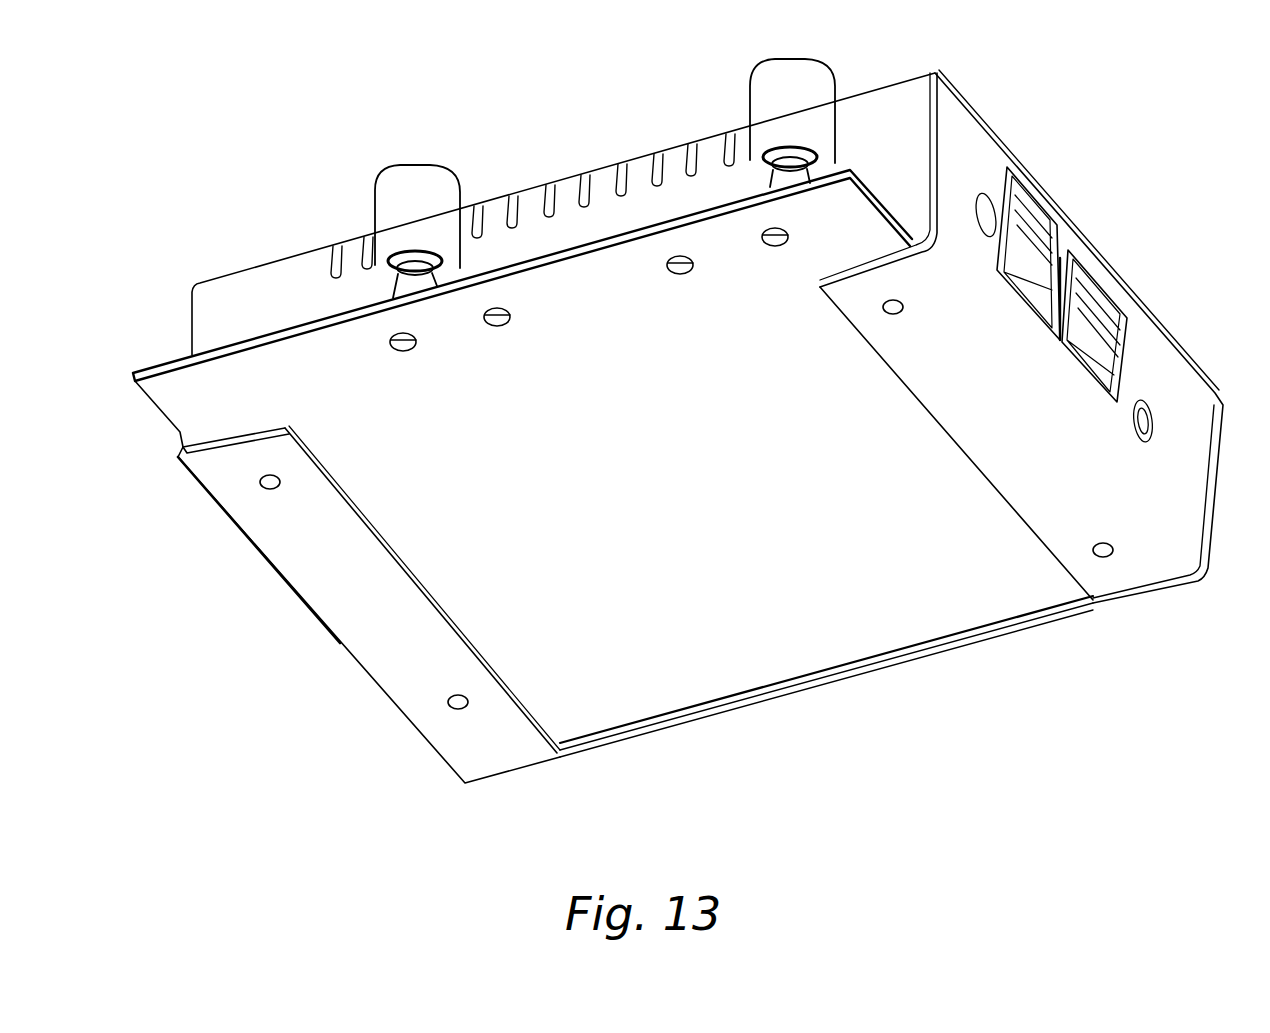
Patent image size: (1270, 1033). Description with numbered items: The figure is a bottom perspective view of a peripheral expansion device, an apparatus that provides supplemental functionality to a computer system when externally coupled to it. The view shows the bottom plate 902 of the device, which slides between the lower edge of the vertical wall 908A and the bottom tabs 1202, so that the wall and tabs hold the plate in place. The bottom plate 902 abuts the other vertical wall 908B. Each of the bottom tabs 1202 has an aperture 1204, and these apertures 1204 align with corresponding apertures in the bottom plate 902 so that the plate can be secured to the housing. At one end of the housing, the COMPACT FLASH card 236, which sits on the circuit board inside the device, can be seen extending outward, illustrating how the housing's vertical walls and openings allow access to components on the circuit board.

The bottom plate 902 is at (686, 486).
The vertical wall 908A is at (893, 113).
The vertical wall 908B is at (997, 628).
The bottom tabs 1202 is at (350, 562).
The apertures 1204 is at (280, 480).
The COMPACT FLASH card 236 is at (175, 460).